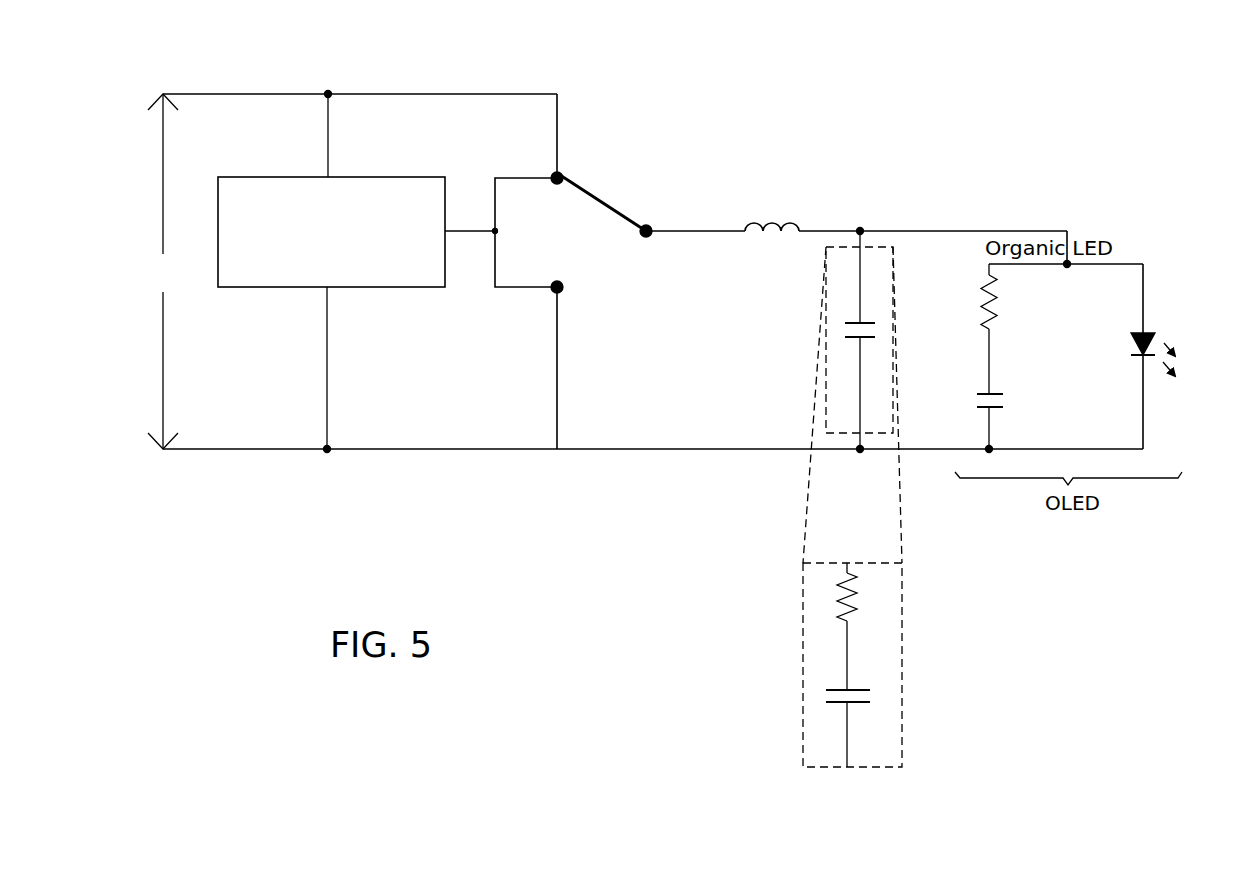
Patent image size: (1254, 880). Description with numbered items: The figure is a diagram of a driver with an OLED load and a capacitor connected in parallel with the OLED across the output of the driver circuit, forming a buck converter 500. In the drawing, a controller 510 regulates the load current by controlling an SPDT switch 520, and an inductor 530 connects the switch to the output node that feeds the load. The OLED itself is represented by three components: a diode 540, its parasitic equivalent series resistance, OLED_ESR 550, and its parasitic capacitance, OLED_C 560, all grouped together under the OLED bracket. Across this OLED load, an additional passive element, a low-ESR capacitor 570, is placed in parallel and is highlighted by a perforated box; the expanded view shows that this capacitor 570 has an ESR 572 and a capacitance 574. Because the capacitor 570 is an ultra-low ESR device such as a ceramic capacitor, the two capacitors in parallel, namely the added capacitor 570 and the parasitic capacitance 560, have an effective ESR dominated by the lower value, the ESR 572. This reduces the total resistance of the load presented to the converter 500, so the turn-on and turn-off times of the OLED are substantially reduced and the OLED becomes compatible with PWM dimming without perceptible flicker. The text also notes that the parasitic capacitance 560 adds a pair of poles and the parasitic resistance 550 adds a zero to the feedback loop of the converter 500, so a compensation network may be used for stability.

The converter 500 is at (357, 39).
The LM3409 controller 510 is at (352, 178).
The SPDT switch 520 is at (602, 193).
The inductor 530 is at (770, 198).
The diode 540 is at (1160, 316).
The ESR 550 is at (985, 303).
The capacitance 560 is at (982, 393).
The capacitor 570 is at (850, 318).
The ESR 572 is at (862, 581).
The capacitance 574 is at (870, 676).